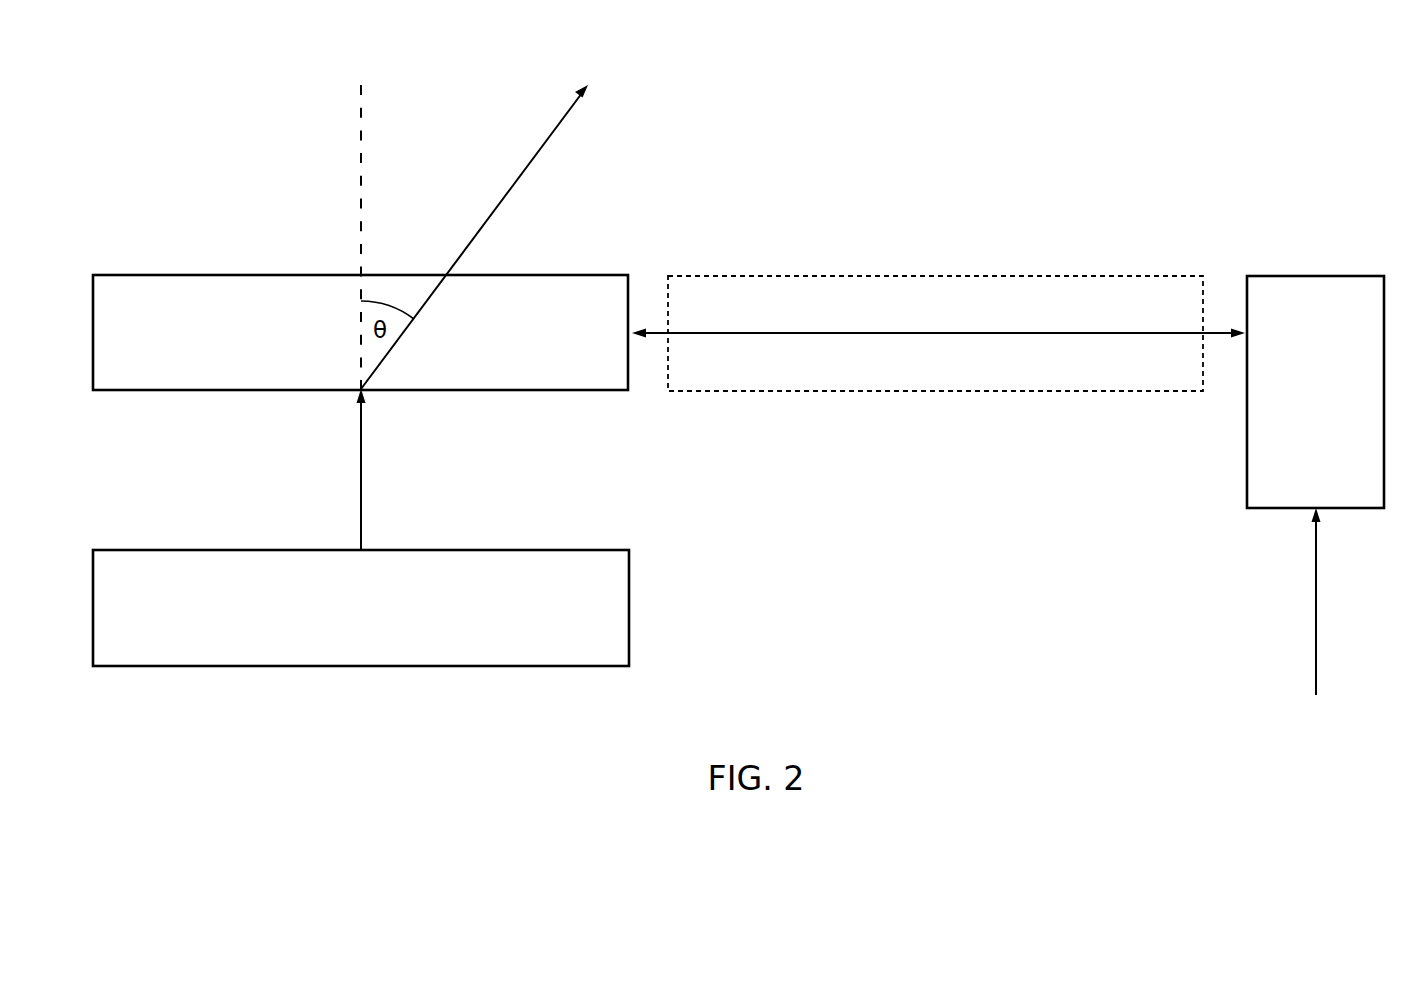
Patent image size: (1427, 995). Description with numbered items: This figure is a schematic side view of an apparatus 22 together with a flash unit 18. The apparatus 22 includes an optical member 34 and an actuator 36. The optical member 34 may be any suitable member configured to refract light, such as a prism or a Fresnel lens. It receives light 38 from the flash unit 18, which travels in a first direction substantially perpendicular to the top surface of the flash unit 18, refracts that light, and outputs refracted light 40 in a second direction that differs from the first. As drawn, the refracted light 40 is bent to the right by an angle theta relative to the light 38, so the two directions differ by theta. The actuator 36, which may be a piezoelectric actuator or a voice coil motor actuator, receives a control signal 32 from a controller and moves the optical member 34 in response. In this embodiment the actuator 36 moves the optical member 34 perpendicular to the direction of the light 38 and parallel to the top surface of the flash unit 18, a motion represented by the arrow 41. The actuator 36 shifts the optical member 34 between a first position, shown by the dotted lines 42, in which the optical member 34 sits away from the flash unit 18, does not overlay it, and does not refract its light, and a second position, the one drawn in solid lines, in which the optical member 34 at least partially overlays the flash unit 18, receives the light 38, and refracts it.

The flash unit 18 is at (630, 615).
The apparatus 22 is at (1095, 99).
The control signal 32 is at (1314, 580).
The optical member 34 is at (572, 378).
The actuator 36 is at (1323, 276).
The light 38 is at (362, 458).
The refracted light 40 is at (548, 135).
The arrow 41 is at (997, 334).
The dotted lines 42 is at (905, 276).